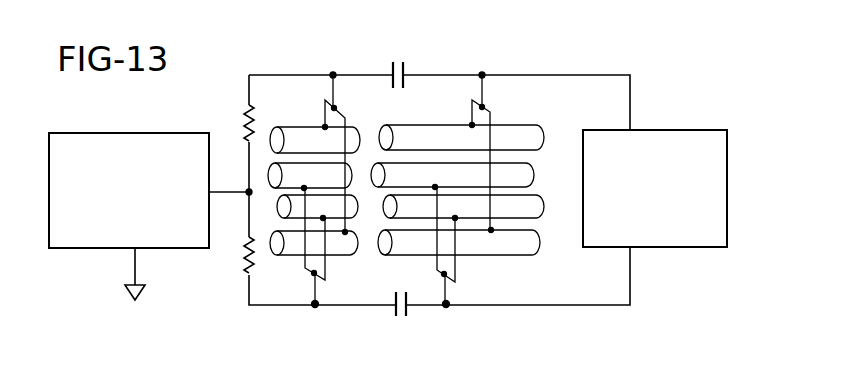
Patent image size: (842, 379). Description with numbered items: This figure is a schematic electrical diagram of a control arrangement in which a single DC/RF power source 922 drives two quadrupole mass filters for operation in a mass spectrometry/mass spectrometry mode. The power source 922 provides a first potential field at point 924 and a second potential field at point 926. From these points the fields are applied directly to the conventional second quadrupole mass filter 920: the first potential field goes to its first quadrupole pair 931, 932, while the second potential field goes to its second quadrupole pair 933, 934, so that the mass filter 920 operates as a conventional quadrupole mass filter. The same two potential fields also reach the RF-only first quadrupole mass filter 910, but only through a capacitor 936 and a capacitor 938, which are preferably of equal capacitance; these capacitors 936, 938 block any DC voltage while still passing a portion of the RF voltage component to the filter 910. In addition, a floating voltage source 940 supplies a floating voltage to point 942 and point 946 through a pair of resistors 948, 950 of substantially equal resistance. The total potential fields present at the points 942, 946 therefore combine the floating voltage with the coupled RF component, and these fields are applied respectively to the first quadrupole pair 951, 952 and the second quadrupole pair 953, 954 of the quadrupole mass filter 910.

The first quadrupole mass filter 910 is at (339, 259).
The second quadrupole mass filter 920 is at (503, 258).
The DC/RF power source 922 is at (697, 130).
The point 924 is at (482, 72).
The point 926 is at (448, 308).
The quadrupole rod of first quadrupole pair 931 is at (513, 127).
The quadrupole rod of first quadrupole pair 932 is at (533, 246).
The quadrupole rod of second quadrupole pair 933 is at (533, 173).
The quadrupole rod of second quadrupole pair 934 is at (546, 207).
The capacitor 936 is at (398, 58).
The capacitor 938 is at (400, 318).
The floating voltage source 940 is at (128, 133).
The point 942 is at (333, 72).
The point 946 is at (315, 307).
The resistor 948 is at (243, 108).
The resistor 950 is at (243, 258).
The quadrupole rod of first quadrupole pair 951 is at (358, 135).
The quadrupole rod of first quadrupole pair 952 is at (353, 249).
The quadrupole rod of second quadrupole pair 953 is at (269, 167).
The quadrupole rod of second quadrupole pair 954 is at (282, 213).